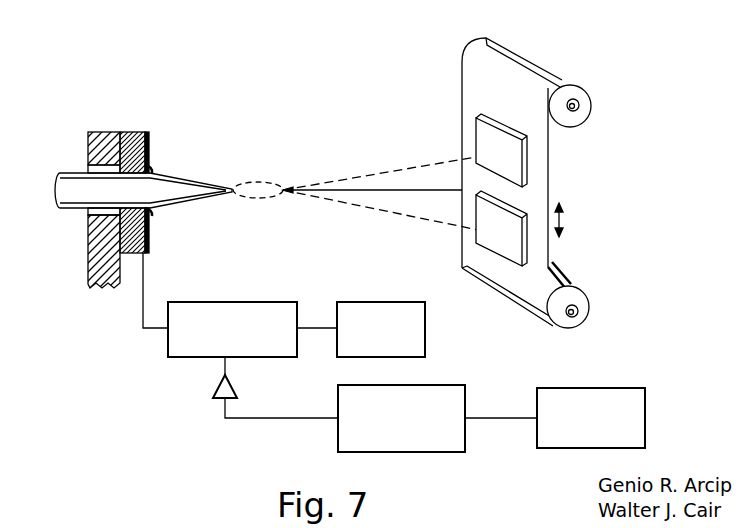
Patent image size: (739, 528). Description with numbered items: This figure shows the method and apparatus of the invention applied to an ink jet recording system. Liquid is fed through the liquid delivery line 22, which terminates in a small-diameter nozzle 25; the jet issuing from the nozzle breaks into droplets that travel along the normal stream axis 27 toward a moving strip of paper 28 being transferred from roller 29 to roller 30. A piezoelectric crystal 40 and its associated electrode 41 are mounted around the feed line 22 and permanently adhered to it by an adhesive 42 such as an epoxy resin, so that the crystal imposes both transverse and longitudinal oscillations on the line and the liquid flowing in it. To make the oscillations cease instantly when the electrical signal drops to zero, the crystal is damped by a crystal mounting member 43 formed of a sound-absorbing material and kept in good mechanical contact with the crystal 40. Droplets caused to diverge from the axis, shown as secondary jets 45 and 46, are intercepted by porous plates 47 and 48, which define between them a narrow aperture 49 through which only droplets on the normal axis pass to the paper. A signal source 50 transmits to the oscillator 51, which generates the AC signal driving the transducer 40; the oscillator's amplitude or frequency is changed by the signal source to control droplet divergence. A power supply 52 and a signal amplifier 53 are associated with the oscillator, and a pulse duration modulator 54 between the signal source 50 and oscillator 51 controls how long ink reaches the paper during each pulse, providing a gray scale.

The liquid delivery line 22 is at (78, 183).
The nozzle 25 is at (218, 187).
The axis of the jet stream 27 is at (344, 190).
The moving strip of paper 28 is at (522, 87).
The roller 29 is at (583, 92).
The roller 30 is at (581, 298).
The piezoelectric crystal 40 is at (137, 132).
The electrode 41 is at (148, 143).
The adhesive 42 is at (149, 170).
The crystal mounting member 43 is at (107, 132).
The secondary jet 45 is at (408, 167).
The secondary jet 46 is at (412, 217).
The porous plate 47 is at (517, 167).
The porous plate 48 is at (578, 228).
The aperture 49 is at (520, 199).
The signal source 50 is at (638, 399).
The oscillator 51 is at (230, 304).
The power supply 52 is at (375, 303).
The signal amplifier 53 is at (215, 389).
The pulse duration modulator 54 is at (458, 400).